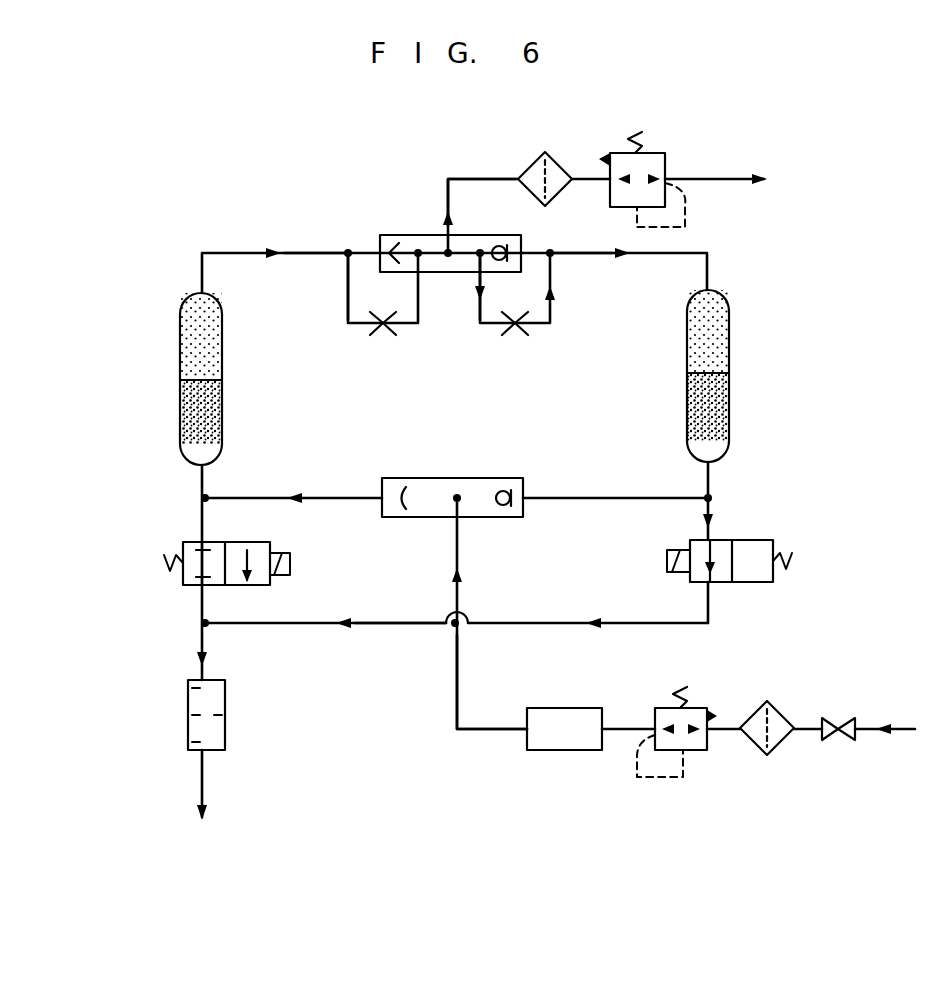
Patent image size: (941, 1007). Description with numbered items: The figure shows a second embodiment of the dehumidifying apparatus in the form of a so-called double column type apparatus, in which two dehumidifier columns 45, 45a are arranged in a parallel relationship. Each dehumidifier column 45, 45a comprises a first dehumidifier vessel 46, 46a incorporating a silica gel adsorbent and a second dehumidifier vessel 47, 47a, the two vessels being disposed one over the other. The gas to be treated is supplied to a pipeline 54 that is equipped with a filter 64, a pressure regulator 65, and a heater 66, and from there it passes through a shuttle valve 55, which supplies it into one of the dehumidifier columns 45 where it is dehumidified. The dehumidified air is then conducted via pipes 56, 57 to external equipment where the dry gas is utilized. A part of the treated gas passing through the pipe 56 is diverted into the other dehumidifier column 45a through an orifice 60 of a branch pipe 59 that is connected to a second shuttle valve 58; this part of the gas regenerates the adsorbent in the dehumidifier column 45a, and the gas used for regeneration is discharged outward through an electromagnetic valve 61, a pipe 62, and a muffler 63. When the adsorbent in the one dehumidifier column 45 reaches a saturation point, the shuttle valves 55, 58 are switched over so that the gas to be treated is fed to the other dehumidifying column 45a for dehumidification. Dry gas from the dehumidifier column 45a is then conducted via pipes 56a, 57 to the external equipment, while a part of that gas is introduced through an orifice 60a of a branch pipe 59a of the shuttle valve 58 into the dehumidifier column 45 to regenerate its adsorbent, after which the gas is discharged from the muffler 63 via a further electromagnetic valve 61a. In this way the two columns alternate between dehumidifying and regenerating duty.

The dehumidifier column 45 is at (151, 361).
The first dehumidifier vessel 46 is at (185, 422).
The second dehumidifier vessel 47 is at (185, 318).
The dehumidifier column 45a is at (776, 376).
The first dehumidifier vessel 46a is at (712, 432).
The second dehumidifier vessel 47a is at (715, 350).
The pipeline 54 is at (457, 695).
The shuttle valve 55 is at (490, 520).
The pipe 56 is at (310, 253).
The pipe 56a is at (592, 260).
The pipe 57 is at (478, 179).
The shuttle valve 58 is at (448, 273).
The branch pipe 59 is at (490, 326).
The branch pipe 59a is at (348, 287).
The orifice 60 is at (524, 340).
The orifice 60a is at (379, 340).
The electromagnetic valve 61 is at (755, 540).
The electromagnetic valve 61a is at (183, 548).
The pipe 62 is at (400, 626).
The muffler 63 is at (190, 715).
The filter 64 is at (775, 742).
The pressure regulator 65 is at (695, 752).
The heater 66 is at (555, 750).